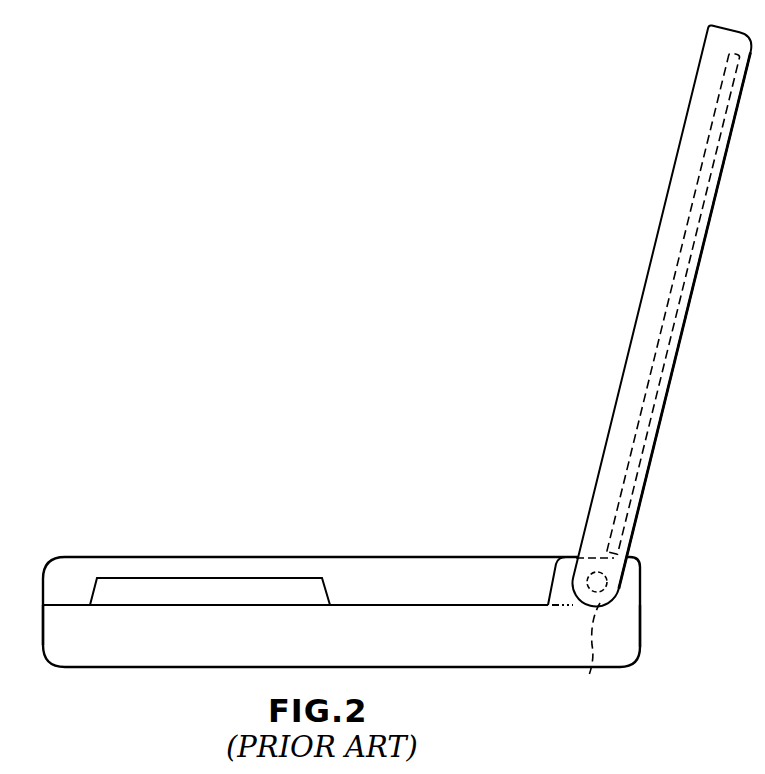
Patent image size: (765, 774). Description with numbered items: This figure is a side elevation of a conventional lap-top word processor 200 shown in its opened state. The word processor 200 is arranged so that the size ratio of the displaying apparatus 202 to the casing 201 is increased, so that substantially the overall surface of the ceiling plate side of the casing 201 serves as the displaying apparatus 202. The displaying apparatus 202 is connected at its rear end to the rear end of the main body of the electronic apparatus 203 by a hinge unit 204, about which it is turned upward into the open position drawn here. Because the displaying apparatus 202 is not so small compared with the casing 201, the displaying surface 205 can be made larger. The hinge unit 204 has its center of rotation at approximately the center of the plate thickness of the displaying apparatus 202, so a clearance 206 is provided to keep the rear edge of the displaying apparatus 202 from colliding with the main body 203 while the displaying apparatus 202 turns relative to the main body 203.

The lap-top word processor 200 is at (399, 368).
The casing 201 is at (694, 621).
The displaying apparatus 202 is at (662, 209).
The main body of the electronic apparatus 203 is at (622, 633).
The hinge unit 204 is at (594, 657).
The displaying surface 205 is at (668, 307).
The clearance 206 is at (617, 554).